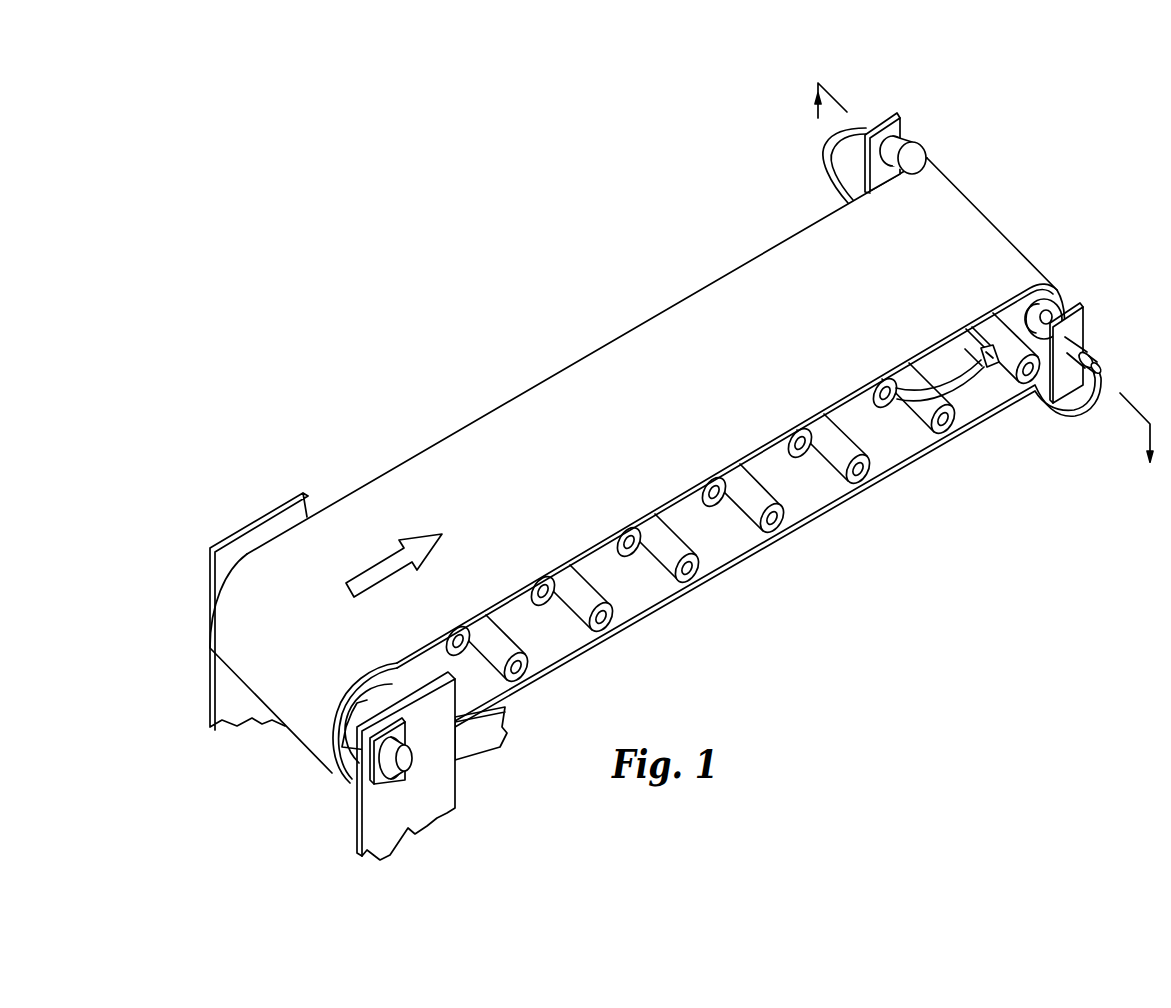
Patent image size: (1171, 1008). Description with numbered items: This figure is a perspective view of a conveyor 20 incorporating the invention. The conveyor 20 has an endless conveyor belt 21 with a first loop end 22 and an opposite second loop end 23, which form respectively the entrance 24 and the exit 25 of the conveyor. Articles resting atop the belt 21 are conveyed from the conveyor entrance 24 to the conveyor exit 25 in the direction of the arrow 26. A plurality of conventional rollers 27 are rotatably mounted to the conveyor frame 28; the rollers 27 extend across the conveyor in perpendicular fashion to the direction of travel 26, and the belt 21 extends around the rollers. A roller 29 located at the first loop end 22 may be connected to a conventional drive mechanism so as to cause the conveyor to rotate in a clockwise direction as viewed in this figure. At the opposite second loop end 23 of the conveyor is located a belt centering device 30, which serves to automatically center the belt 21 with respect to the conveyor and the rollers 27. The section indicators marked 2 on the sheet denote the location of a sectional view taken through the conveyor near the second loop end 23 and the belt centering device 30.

The section line 2- 2 is at (985, 254).
The conveyor 20 is at (621, 247).
The endless conveyor belt 21 is at (448, 468).
The first loop end 22 is at (243, 595).
The second loop end 23 is at (925, 170).
The entrance 24 is at (280, 692).
The exit 25 is at (982, 222).
The arrow 26 is at (371, 562).
The rollers 27 is at (887, 375).
The conveyor frame 28 is at (423, 803).
The roller 29 is at (341, 781).
The belt centering device 30 is at (1093, 327).